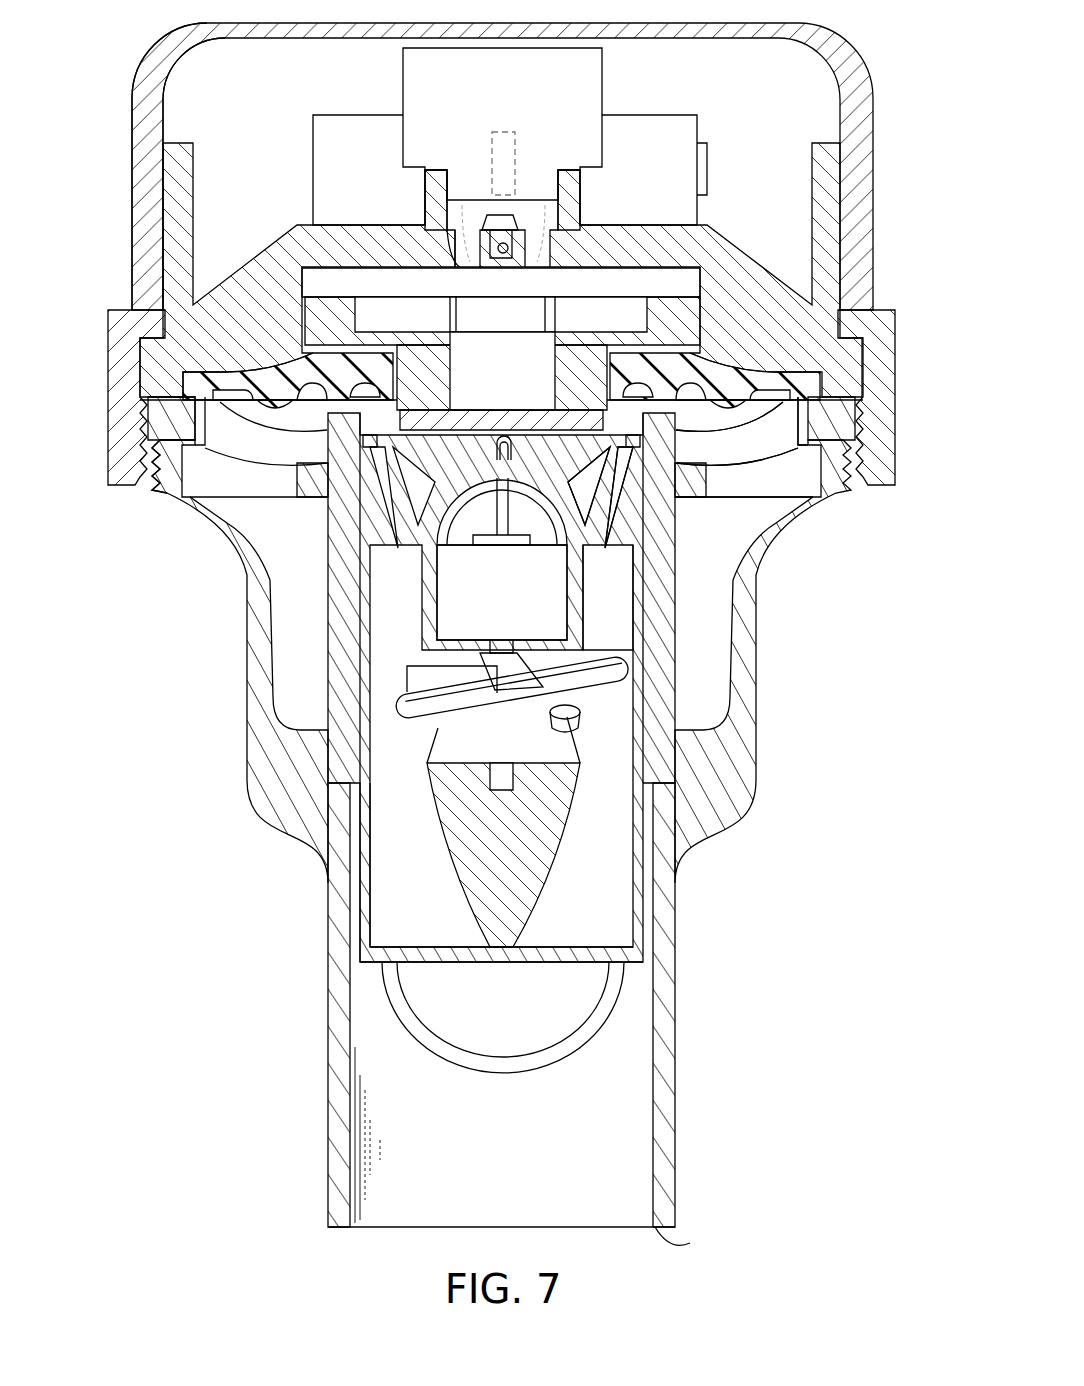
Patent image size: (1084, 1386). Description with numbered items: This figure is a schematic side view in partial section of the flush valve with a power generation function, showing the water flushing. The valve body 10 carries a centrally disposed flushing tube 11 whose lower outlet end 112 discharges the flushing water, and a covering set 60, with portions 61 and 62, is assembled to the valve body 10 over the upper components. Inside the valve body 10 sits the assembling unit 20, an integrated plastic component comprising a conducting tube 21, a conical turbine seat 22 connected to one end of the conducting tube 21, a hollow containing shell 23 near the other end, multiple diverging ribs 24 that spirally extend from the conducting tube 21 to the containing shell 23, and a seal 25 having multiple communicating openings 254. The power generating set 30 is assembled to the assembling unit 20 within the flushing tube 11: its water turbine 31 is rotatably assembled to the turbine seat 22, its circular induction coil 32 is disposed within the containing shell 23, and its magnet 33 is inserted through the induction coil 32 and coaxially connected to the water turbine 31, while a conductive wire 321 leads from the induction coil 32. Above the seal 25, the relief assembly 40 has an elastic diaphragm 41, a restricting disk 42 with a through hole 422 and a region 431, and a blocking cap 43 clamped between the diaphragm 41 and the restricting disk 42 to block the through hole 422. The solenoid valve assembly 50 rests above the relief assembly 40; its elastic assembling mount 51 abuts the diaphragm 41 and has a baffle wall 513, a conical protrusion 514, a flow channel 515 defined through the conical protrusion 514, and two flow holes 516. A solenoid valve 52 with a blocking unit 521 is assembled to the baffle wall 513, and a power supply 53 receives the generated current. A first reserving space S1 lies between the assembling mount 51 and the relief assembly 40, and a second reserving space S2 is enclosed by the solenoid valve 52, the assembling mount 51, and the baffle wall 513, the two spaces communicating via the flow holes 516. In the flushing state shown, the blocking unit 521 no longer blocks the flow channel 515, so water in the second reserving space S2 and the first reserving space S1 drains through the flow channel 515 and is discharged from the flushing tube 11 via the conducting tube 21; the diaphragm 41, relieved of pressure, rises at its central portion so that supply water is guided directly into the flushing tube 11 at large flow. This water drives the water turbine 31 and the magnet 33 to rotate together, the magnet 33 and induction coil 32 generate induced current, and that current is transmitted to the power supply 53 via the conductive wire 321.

The valve body 10 is at (479, 821).
The flushing tube 11 is at (681, 1029).
The outlet end 112 is at (690, 1243).
The assembling unit 20 is at (492, 743).
The conducting tube 21 is at (368, 880).
The turbine seat 22 is at (518, 897).
The containing shell 23 is at (558, 505).
The diverging ribs 24 is at (613, 602).
The seal 25 is at (142, 496).
The communicating openings 254 is at (780, 442).
The power generating set 30 is at (514, 643).
The water turbine 31 is at (566, 748).
The induction coil 32 is at (428, 655).
The magnet 33 is at (439, 628).
The conductive wire 321 is at (498, 434).
The relief assembly 40 is at (539, 352).
The diaphragm 41 is at (822, 378).
The restricting disk 42 is at (342, 292).
The through hole 422 is at (540, 355).
The plate channel 431 is at (392, 353).
The blocking cap 43 is at (435, 434).
The solenoid valve assembly 50 is at (501, 222).
The assembling mount 51 is at (707, 211).
The solenoid valve 52 is at (616, 79).
The power supply 53 is at (318, 135).
The baffle wall 513 is at (437, 170).
The conical protrusion 514 is at (505, 228).
The flow channel 515 is at (518, 248).
The flow holes 516 is at (458, 236).
The blocking unit 521 is at (505, 133).
The covering set 60 is at (160, 28).
The flange ring 61 is at (124, 323).
The cap wall 62 is at (150, 135).
The first reserving space S1 is at (690, 281).
The second reserving space S2 is at (461, 198).